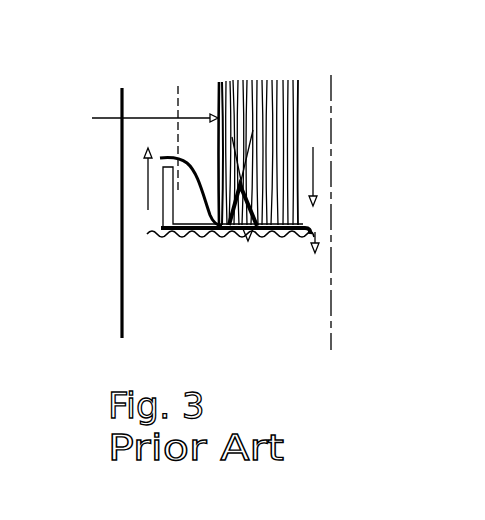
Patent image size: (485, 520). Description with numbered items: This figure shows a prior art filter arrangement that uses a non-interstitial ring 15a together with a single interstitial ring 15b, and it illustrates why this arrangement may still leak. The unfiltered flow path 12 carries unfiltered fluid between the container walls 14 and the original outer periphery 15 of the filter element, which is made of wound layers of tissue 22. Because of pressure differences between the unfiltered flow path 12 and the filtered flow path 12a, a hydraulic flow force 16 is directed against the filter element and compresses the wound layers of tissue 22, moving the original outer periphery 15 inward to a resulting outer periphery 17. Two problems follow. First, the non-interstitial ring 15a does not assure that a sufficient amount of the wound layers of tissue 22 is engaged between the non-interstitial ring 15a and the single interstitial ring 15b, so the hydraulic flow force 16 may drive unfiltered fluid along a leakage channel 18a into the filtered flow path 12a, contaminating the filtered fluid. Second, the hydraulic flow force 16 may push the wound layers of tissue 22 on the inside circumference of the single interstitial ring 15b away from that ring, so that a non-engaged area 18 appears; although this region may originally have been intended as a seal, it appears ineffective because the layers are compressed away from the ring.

The unfiltered flow path 12 is at (150, 188).
The filtered flow path 12a is at (318, 163).
The container walls 14 is at (122, 105).
The original outer periphery 15 is at (178, 97).
The non-interstitial ring 15a is at (165, 228).
The single interstitial ring 15b is at (246, 243).
The hydraulic flow force 16 is at (140, 119).
The resulting outer periphery 17 is at (218, 92).
The non-engaged area 18 is at (256, 237).
The leakage channel 18a is at (310, 228).
The wound layers of tissue 22 is at (272, 80).